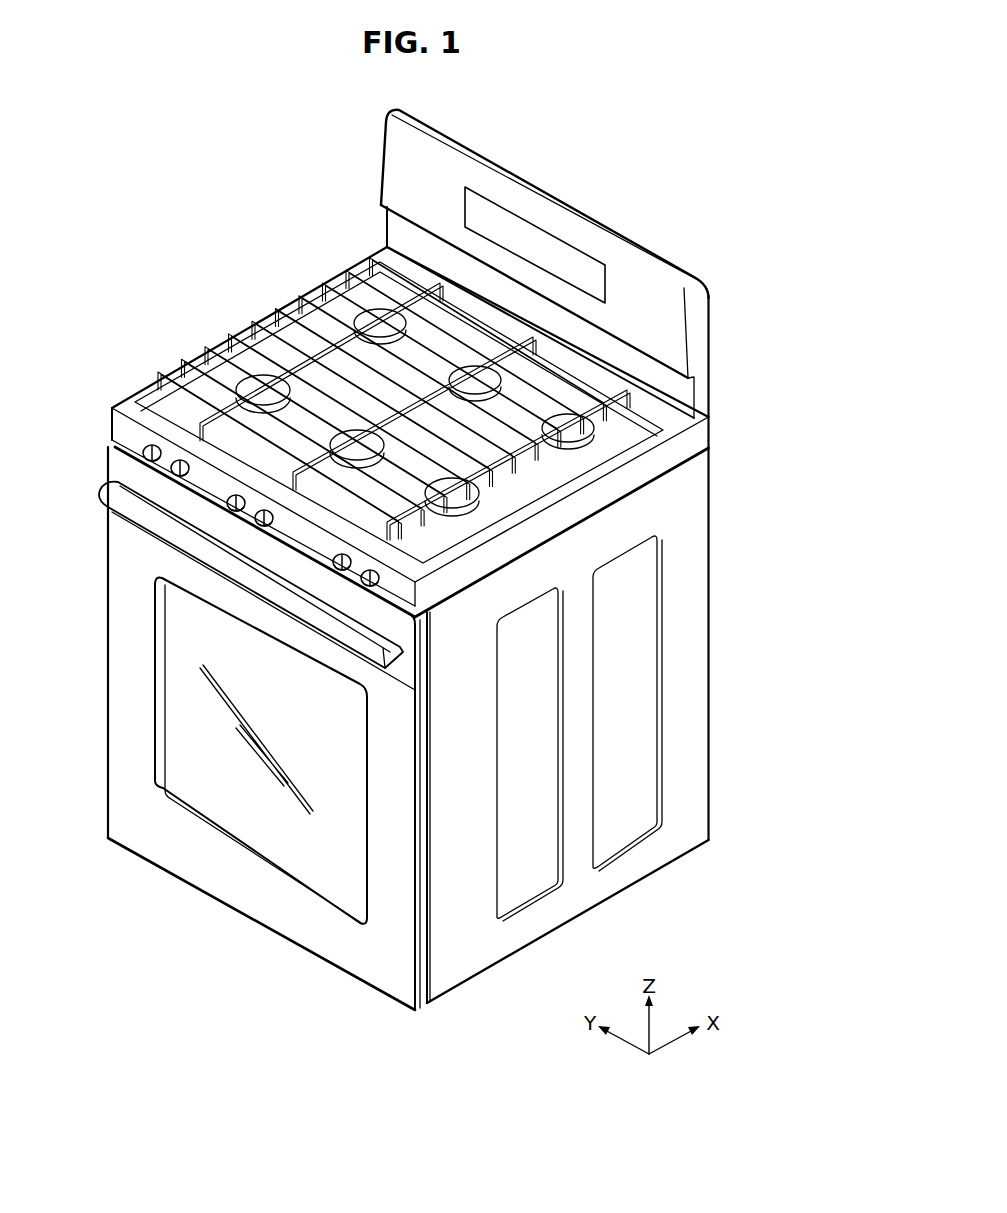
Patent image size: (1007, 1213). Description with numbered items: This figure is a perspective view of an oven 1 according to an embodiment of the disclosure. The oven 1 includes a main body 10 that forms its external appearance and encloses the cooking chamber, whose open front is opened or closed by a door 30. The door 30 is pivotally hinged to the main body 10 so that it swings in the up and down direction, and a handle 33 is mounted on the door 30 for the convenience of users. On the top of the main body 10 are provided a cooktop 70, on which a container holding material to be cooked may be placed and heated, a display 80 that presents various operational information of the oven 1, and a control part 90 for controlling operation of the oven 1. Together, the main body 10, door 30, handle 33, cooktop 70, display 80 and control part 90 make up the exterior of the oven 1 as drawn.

The oven 1 is at (675, 108).
The main body 10 is at (722, 561).
The door 30 is at (124, 720).
The handle 33 is at (110, 514).
The cooktop 70 is at (538, 472).
The display 80 is at (525, 232).
The control part 90 is at (147, 462).